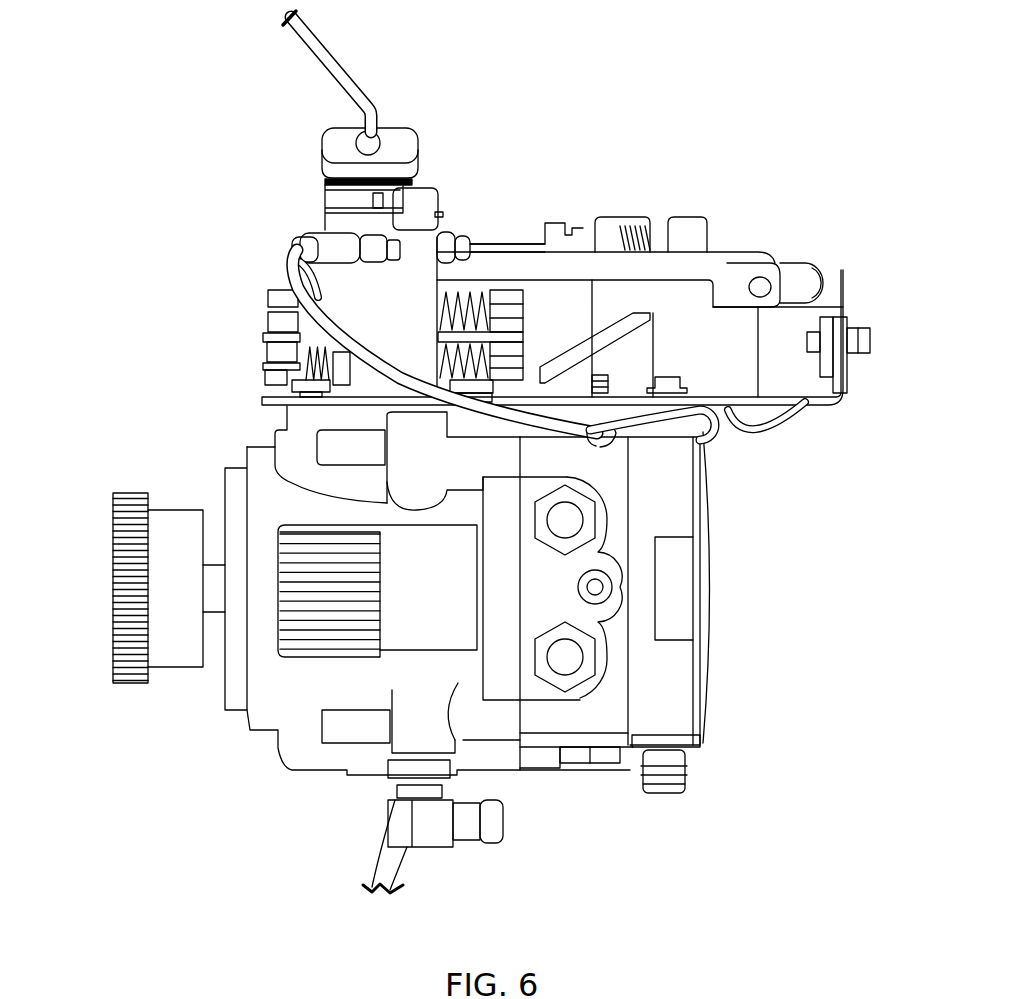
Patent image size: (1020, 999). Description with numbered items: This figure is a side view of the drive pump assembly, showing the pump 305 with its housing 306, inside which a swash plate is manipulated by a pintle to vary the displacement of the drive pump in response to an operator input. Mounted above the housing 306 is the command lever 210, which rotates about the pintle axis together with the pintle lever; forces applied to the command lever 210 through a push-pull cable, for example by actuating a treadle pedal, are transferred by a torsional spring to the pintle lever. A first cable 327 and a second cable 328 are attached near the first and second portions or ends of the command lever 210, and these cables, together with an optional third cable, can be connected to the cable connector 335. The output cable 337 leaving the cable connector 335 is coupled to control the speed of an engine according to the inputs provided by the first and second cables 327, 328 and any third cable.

The command lever 210 is at (722, 252).
The pump 305 is at (240, 425).
The housing 306 is at (707, 643).
The first cable 327 is at (742, 422).
The second cable 328 is at (294, 262).
The cable connector 335 is at (390, 147).
The output cable 337 is at (338, 62).